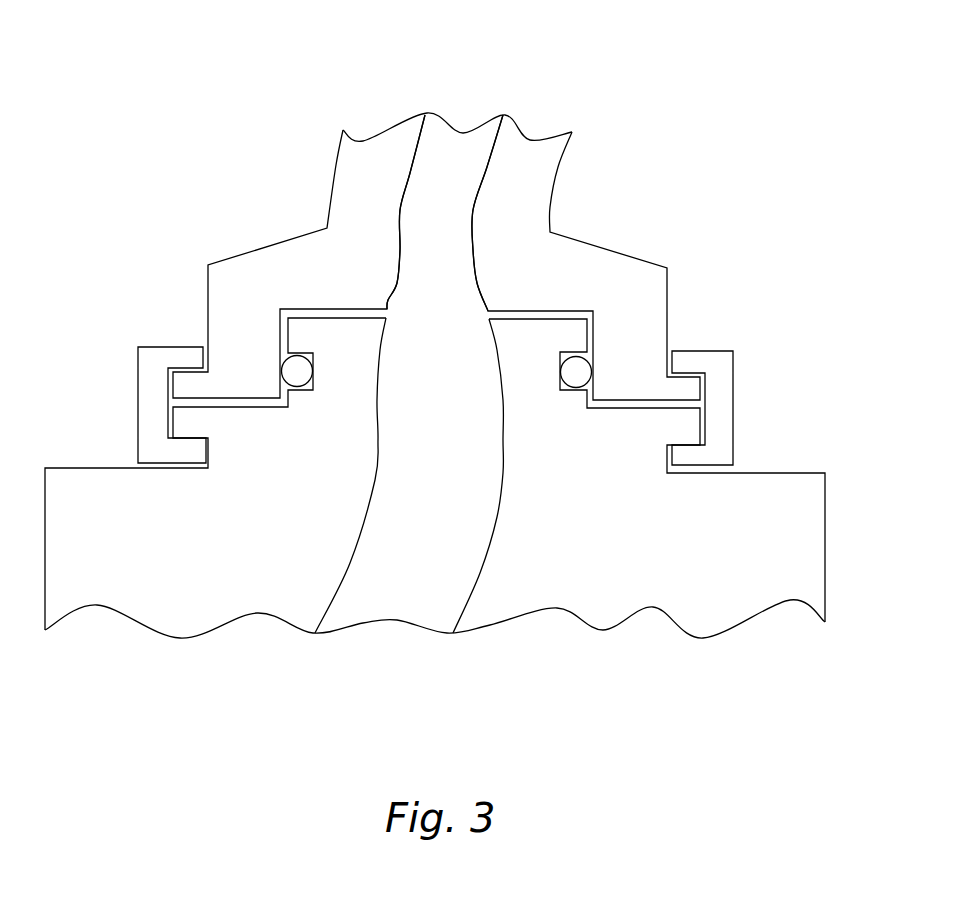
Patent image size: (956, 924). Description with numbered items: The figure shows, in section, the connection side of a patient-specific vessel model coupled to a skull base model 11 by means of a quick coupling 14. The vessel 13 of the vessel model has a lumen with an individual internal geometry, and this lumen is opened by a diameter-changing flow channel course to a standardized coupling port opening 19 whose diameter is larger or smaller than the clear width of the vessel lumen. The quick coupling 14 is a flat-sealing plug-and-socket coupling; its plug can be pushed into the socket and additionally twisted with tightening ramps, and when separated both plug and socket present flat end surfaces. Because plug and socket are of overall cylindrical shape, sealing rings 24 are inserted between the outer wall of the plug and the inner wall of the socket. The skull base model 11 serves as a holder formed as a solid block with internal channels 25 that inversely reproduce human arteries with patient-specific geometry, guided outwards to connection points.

The skull base model 11 is at (653, 568).
The vessel 13 is at (527, 155).
The quick coupling 14 is at (715, 377).
The coupling port opening 19 is at (435, 253).
The sealing rings 24 is at (280, 368).
The internal channels 25 is at (422, 567).